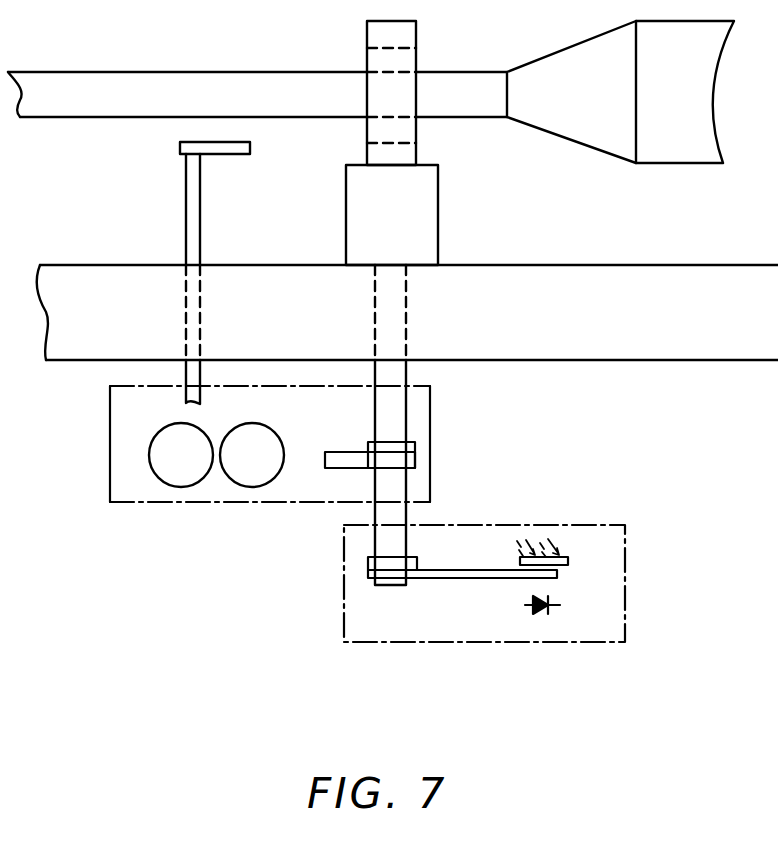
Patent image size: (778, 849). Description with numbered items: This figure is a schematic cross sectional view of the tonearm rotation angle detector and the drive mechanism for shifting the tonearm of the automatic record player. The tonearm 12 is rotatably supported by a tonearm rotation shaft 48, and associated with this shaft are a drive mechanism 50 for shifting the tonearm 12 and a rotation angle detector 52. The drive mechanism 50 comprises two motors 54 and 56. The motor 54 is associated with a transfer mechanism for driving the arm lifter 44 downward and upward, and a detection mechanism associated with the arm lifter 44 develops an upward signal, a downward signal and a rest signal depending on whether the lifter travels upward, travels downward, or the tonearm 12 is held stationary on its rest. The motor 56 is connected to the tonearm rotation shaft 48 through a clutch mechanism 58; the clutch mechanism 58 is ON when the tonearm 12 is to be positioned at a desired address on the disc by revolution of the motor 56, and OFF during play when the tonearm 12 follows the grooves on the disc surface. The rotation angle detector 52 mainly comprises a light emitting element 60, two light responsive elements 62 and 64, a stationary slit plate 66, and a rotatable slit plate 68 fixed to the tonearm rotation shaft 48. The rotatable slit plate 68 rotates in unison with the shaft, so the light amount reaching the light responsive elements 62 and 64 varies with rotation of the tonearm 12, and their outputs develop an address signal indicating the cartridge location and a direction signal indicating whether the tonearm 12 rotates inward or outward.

The tonearm 12 is at (239, 85).
The arm lifter 44 is at (192, 203).
The tonearm rotation shaft 48 is at (390, 375).
The drive mechanism 50 is at (142, 485).
The rotation angle detector 52 is at (640, 586).
The motor 54 is at (165, 452).
The motor 56 is at (257, 468).
The clutch mechanism 58 is at (412, 460).
The light emitting element 60 is at (540, 615).
The light responsive element 62 is at (530, 537).
The light responsive element 64 is at (553, 538).
The stationary slit plate 66 is at (522, 557).
The rotatable slit plate 68 is at (472, 580).